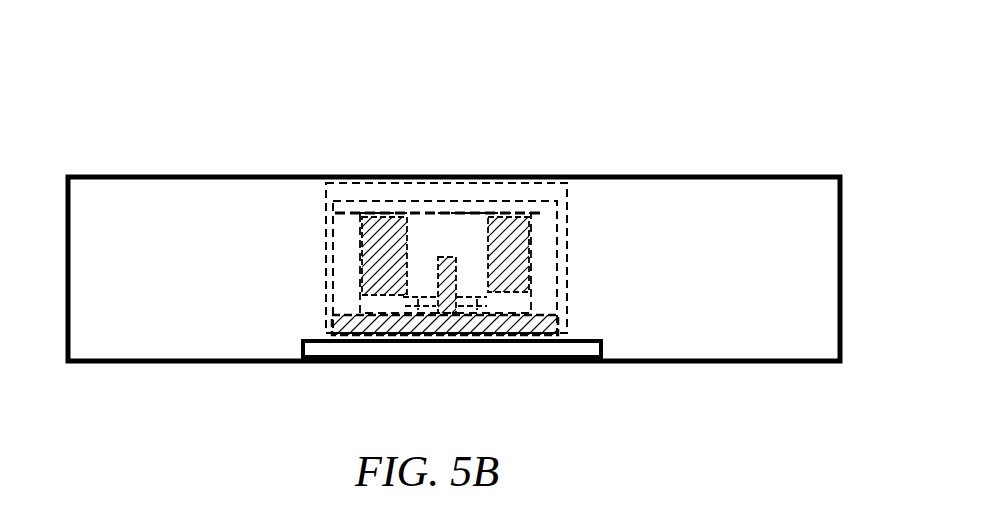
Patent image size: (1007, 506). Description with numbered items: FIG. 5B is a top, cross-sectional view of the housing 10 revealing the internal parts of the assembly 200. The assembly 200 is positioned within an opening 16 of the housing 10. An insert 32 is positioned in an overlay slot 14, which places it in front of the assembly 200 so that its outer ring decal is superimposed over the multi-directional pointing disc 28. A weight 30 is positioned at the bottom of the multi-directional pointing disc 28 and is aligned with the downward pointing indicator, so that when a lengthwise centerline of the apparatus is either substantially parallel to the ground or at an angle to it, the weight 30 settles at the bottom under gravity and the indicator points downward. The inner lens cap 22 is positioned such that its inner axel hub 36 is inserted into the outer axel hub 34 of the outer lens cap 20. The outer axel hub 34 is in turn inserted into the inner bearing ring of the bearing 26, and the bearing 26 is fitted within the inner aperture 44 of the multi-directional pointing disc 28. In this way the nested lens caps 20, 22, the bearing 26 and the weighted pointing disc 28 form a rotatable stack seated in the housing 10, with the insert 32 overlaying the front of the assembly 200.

The assembly 200 is at (428, 157).
The housing 10 is at (653, 175).
The overlay slot 14 is at (302, 348).
The opening 16 is at (327, 280).
The outer lens cap 20 is at (552, 202).
The inner lens cap 22 is at (347, 325).
The bearing 26 is at (380, 242).
The multi-directional pointing disc 28 is at (557, 297).
The weight 30 is at (465, 310).
The insert 32 is at (535, 349).
The outer axel hub 34 is at (473, 253).
The inner axel hub 36 is at (452, 255).
The inner aperture 44 is at (532, 272).